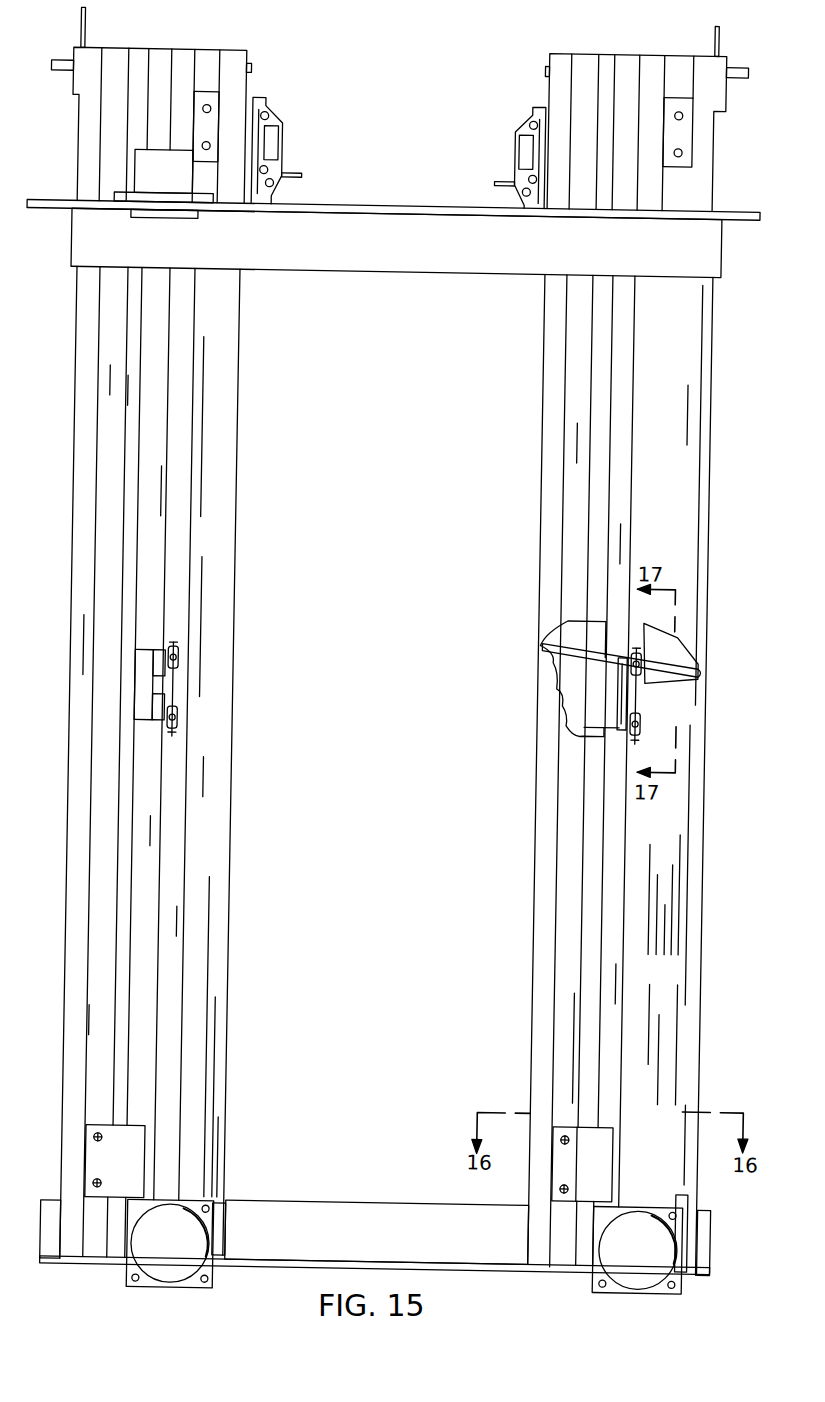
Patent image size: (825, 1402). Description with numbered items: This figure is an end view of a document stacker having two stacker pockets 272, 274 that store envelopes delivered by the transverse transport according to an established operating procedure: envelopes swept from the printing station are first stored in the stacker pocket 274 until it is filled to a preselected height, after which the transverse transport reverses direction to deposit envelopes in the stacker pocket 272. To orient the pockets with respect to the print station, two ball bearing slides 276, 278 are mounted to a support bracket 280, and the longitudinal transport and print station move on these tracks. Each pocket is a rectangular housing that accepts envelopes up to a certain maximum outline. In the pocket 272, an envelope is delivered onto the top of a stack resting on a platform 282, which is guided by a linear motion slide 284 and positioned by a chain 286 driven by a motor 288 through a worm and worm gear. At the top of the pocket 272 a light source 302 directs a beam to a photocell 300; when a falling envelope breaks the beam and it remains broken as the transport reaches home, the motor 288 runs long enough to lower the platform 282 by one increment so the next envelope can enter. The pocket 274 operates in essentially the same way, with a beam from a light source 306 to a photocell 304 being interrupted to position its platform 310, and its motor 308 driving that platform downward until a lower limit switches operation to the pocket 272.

The stacker pocket 272 is at (532, 486).
The stacker pocket 274 is at (248, 513).
The ball bearing slide 276 is at (514, 162).
The ball bearing slide 278 is at (272, 154).
The support bracket 280 is at (388, 206).
The platform 282 is at (690, 663).
The linear motion slide 284 is at (613, 914).
The chain 286 is at (648, 731).
The motor 288 is at (675, 1258).
The photocell 300 is at (545, 64).
The light source 302 is at (736, 62).
The photocell 304 is at (246, 64).
The light source 306 is at (60, 65).
The left motor 308 is at (207, 1259).
The platform 310 is at (154, 654).